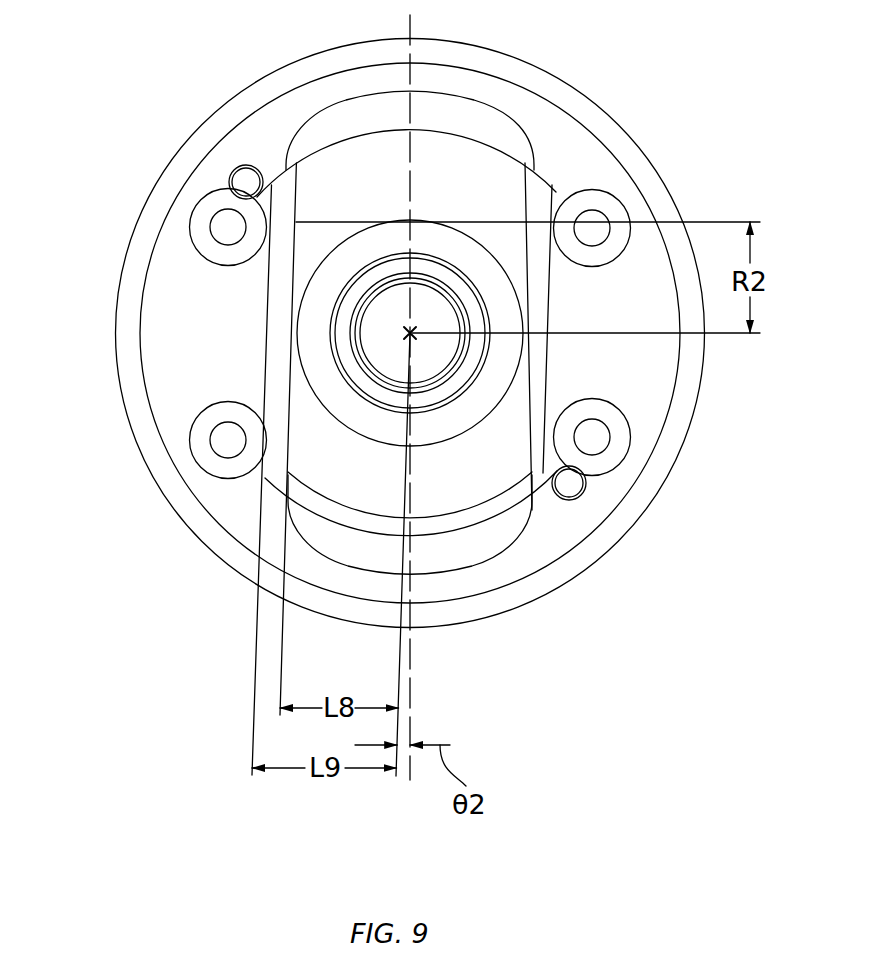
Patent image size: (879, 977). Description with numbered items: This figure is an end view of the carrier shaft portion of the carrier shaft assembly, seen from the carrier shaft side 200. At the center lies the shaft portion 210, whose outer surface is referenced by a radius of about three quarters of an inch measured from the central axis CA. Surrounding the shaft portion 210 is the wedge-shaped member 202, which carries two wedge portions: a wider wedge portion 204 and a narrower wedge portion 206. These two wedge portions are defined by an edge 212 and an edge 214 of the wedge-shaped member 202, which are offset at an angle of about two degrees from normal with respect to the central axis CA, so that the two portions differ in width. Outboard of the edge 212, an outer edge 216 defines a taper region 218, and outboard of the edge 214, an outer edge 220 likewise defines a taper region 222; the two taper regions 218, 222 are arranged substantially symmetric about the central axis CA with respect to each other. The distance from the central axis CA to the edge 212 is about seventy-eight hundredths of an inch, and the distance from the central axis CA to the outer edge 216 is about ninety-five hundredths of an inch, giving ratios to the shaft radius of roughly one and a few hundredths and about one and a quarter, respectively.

The carrier shaft side 200 is at (176, 96).
The wedge-shaped member 202 is at (262, 482).
The wider wedge portion 204 is at (461, 488).
The narrower wedge portion 206 is at (461, 160).
The shaft portion 210 is at (540, 378).
The edge 212 is at (273, 318).
The edge 214 is at (550, 188).
The outer edge 216 is at (272, 378).
The taper region 218 is at (312, 461).
The outer edge 220 is at (556, 190).
The taper region 222 is at (545, 287).
The central axis CA is at (413, 338).